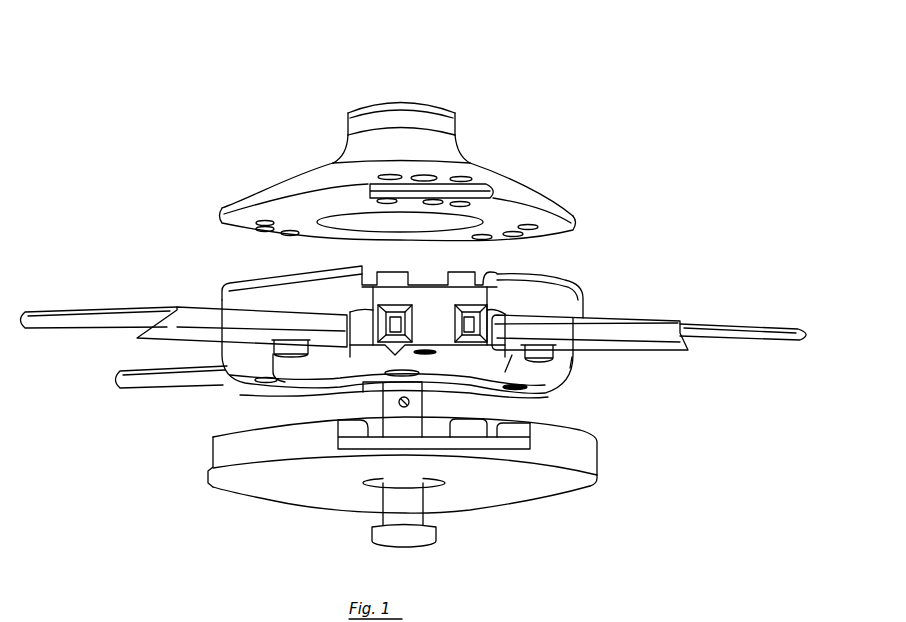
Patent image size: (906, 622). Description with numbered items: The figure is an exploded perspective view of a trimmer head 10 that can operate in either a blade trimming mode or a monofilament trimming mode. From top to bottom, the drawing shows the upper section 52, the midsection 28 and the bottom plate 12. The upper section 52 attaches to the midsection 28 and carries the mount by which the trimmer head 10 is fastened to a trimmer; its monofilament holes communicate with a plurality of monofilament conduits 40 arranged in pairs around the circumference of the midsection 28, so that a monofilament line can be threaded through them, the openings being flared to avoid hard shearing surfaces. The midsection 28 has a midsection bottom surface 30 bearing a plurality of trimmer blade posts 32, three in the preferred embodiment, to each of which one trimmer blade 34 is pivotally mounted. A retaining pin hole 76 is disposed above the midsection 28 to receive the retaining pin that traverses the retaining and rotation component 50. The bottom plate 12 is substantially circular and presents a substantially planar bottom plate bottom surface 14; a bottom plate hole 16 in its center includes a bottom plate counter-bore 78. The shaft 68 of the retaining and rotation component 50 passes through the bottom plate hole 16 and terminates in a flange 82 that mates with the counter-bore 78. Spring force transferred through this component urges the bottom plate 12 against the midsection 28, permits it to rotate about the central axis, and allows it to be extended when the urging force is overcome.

The trimmer head 10 is at (500, 45).
The bottom plate 12 is at (440, 488).
The bottom plate bottom surface 14 is at (573, 485).
The bottom plate hole 16 is at (428, 495).
The midsection 28 is at (420, 330).
The midsection bottom surface 30 is at (555, 370).
The trimmer blade posts 32 is at (283, 357).
The trimmer blade 34 is at (115, 312).
The monofilament conduits 40 is at (458, 318).
The retaining and rotation component 50 is at (392, 430).
The upper section 52 is at (497, 137).
The shaft 68 is at (416, 412).
The retaining pin hole 76 is at (385, 393).
The bottom plate counter-bore 78 is at (428, 487).
The flange 82 is at (392, 543).